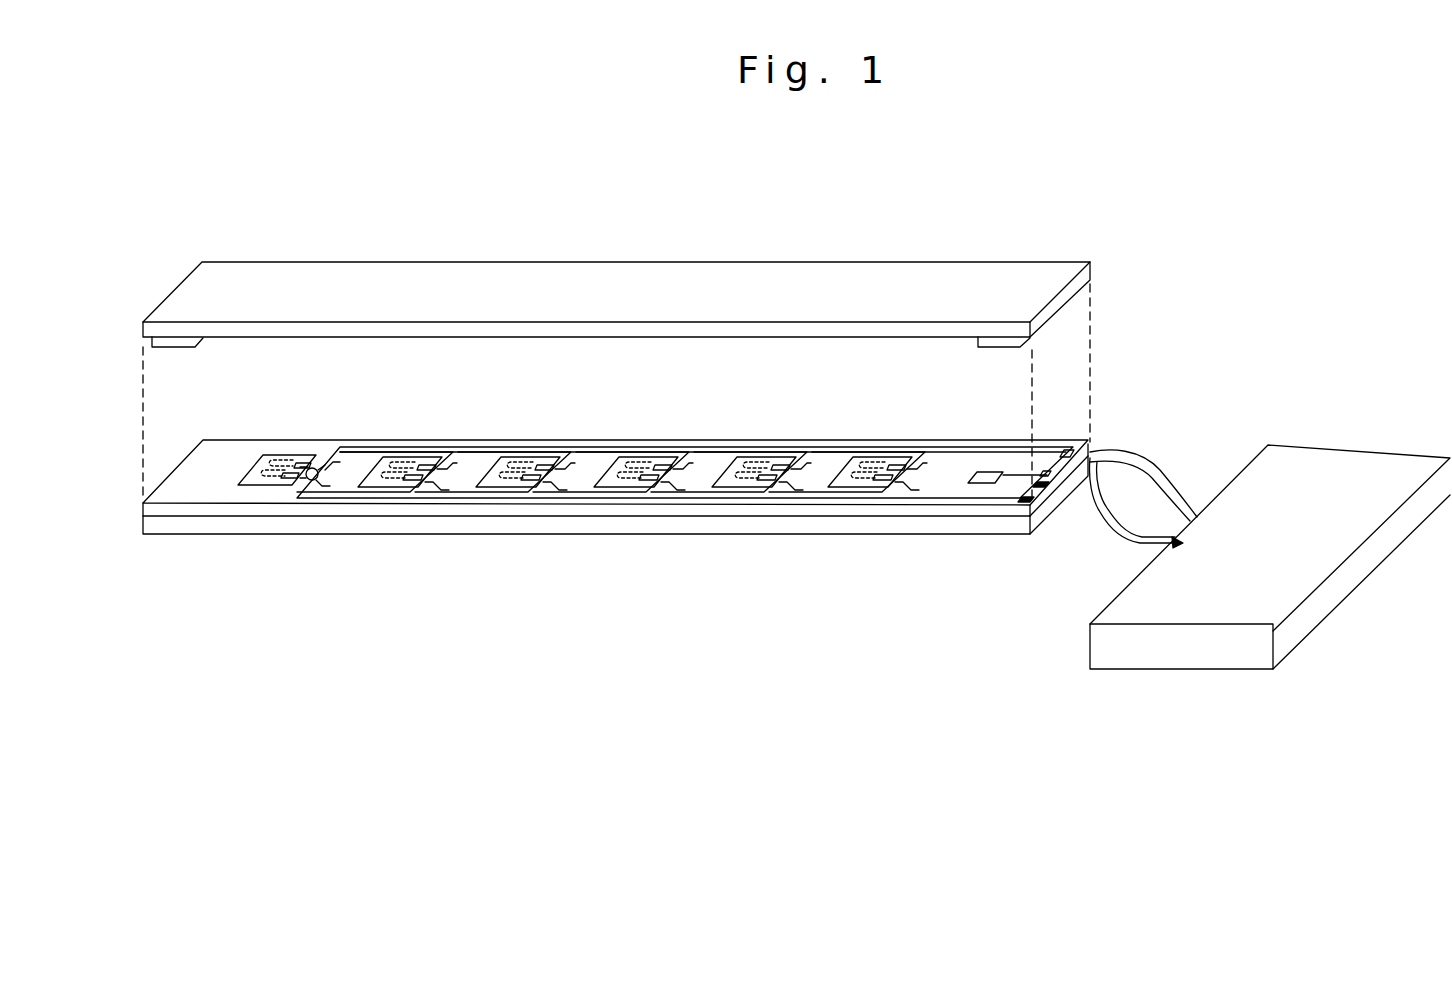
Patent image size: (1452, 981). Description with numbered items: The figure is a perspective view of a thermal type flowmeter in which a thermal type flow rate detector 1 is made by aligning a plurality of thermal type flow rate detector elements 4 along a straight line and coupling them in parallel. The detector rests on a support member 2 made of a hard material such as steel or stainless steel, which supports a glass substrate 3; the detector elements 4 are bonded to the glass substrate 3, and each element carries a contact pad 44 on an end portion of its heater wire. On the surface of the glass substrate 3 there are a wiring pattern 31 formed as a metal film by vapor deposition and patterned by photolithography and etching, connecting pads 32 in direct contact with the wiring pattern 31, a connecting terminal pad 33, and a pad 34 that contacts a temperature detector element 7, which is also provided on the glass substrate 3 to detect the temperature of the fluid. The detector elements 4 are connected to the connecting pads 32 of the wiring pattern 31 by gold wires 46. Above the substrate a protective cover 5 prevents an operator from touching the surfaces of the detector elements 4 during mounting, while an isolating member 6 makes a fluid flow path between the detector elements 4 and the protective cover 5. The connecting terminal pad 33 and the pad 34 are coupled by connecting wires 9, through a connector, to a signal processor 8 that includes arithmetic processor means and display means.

The thermal type flow rate detector 1 is at (777, 241).
The support member 2 is at (695, 528).
The glass substrate 3 is at (865, 510).
The thermal type flow rate detector element 4 is at (643, 458).
The protective cover 5 is at (616, 360).
The isolating member 6 is at (985, 347).
The temperature detector element 7 is at (992, 472).
The signal processor 8 is at (1188, 660).
The connecting wires 9 is at (1165, 483).
The wiring pattern 31 is at (753, 450).
The connecting pads 32 is at (452, 467).
The connecting terminal pad 33 is at (1021, 502).
The pad 34 is at (1048, 490).
The contact pad 44 is at (277, 480).
The gold wires 46 is at (295, 494).